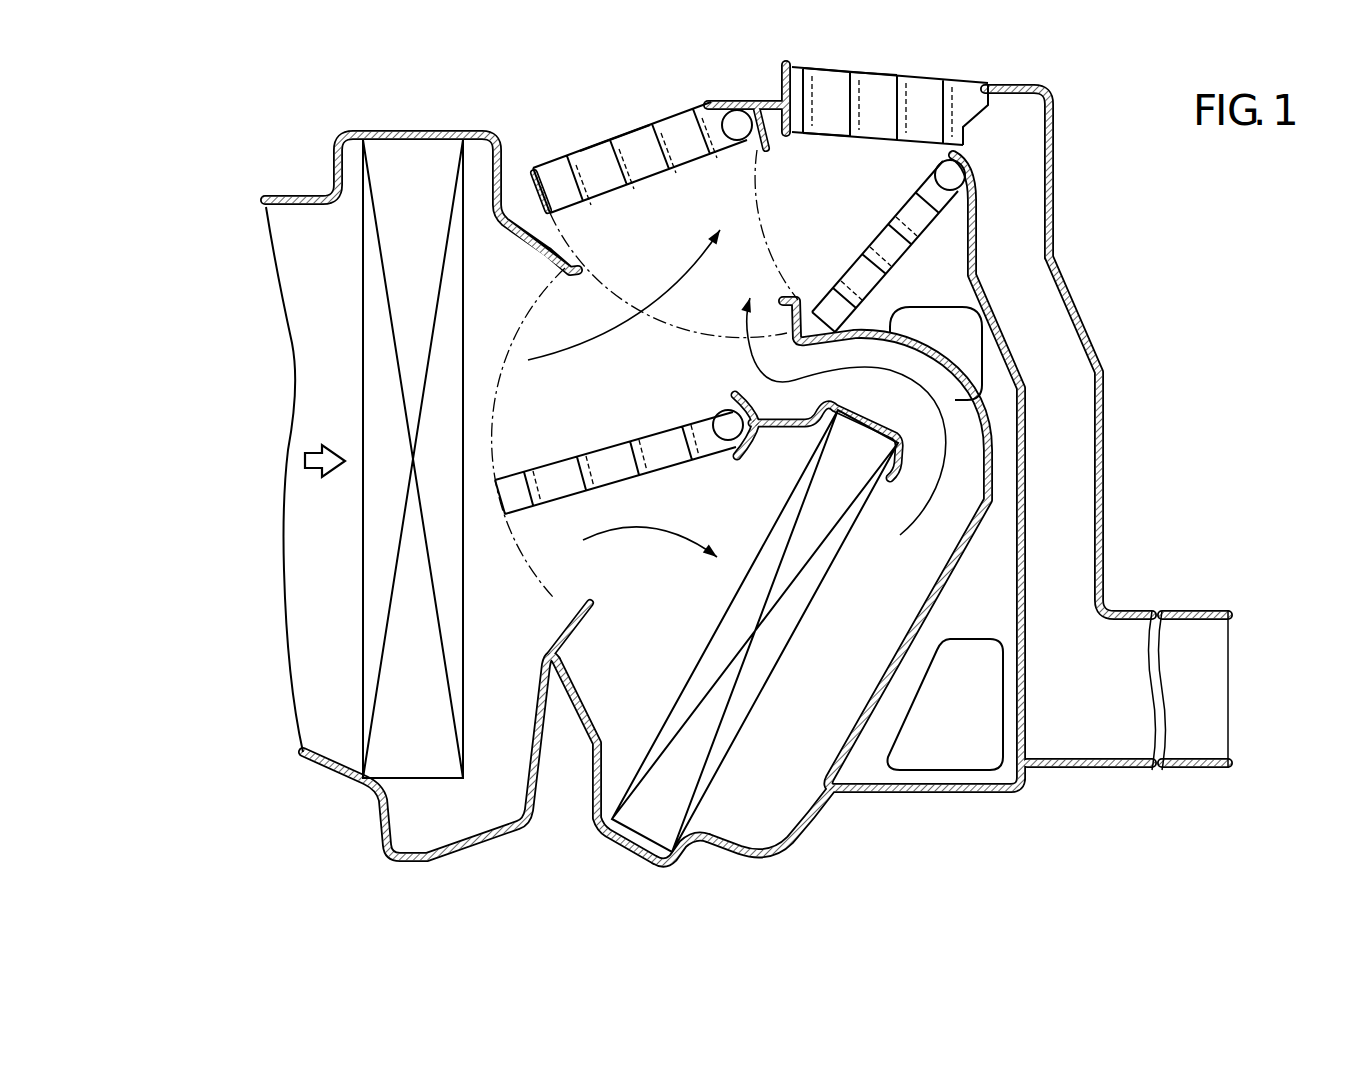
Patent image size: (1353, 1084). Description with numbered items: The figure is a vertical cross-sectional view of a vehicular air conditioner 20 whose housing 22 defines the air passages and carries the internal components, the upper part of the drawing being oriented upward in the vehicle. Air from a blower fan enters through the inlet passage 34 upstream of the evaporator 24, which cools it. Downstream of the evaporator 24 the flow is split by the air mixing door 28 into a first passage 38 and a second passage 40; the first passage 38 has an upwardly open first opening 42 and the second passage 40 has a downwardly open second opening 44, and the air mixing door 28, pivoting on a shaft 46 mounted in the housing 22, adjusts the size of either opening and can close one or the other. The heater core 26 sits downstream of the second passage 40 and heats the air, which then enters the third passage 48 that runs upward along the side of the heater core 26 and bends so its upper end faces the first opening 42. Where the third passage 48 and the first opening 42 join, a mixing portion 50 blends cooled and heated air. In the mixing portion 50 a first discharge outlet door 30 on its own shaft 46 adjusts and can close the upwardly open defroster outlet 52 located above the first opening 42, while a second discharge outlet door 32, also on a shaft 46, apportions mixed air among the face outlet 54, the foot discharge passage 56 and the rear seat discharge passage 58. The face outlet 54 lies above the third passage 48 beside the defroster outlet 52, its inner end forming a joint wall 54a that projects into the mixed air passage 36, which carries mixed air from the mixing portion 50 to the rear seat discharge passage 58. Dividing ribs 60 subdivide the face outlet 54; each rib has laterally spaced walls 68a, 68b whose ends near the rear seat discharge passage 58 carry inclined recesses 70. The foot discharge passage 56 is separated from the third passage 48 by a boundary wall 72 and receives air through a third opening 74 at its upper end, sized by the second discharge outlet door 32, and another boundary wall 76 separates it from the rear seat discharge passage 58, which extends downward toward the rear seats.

The vehicular air conditioner 20 is at (421, 93).
The housing 22 is at (1085, 318).
The evaporator 24 is at (377, 592).
The heater core 26 is at (752, 673).
The air mixing door 28 is at (603, 463).
The first discharge outlet door 30 is at (638, 168).
The second discharge outlet door 32 is at (870, 253).
The inlet passage 34 is at (325, 667).
The mixed air passage 36 is at (827, 187).
The first passage 38 is at (570, 367).
The second passage 40 is at (636, 578).
The first opening 42 is at (578, 272).
The second opening 44 is at (573, 597).
The shaft 46 is at (738, 112).
The third passage 48 is at (780, 798).
The mixing portion 50 is at (738, 263).
The defroster outlet 52 is at (615, 142).
The face outlet 54 is at (975, 93).
The joint wall 54a is at (782, 92).
The foot discharge passage 56 is at (988, 562).
The rear seat discharge passage 58 is at (1060, 433).
The dividing rib 60 is at (920, 92).
The wall 68a is at (825, 100).
The wall 68b is at (825, 100).
The recess 70 is at (970, 123).
The boundary wall 72 is at (908, 618).
The third opening 74 is at (792, 300).
The boundary wall 76 is at (1027, 655).